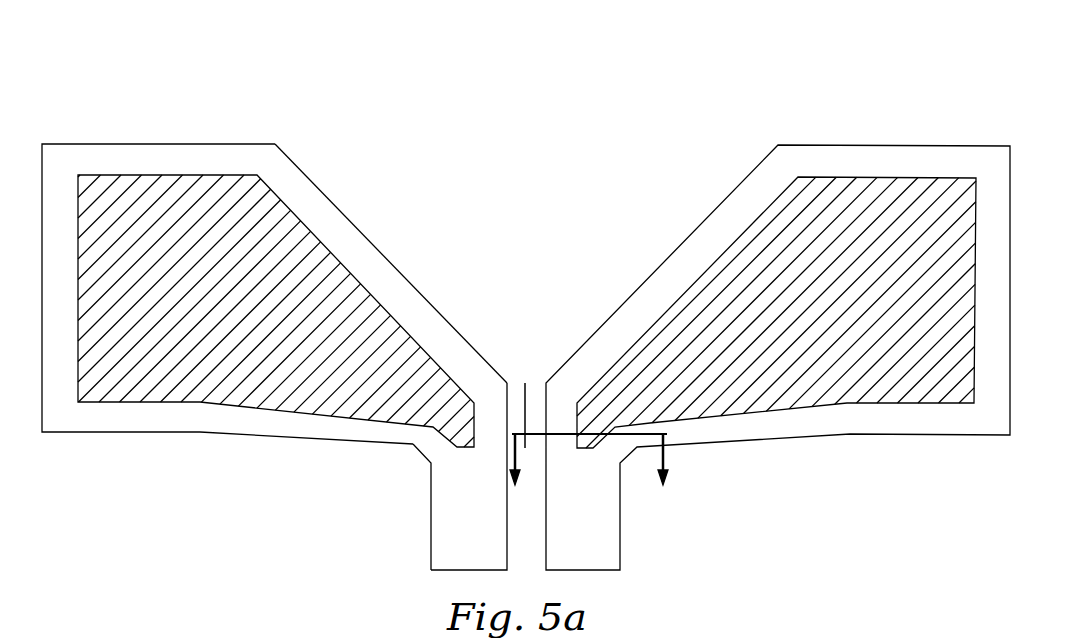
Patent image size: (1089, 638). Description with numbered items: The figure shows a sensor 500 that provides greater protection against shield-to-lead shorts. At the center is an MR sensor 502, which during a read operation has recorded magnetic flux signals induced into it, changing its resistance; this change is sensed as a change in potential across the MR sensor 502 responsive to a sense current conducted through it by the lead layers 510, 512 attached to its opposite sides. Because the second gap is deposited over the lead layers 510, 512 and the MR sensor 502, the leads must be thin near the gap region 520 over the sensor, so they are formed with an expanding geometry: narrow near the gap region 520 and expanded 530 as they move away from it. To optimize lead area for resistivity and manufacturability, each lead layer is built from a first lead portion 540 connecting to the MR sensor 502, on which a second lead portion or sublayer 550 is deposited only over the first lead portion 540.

The sensor 500 is at (558, 296).
The MR sensor 502 is at (508, 430).
The lead layer 510 is at (315, 478).
The lead layer 512 is at (735, 478).
The gap region 520 is at (429, 517).
The expanded portion of lead layer 530 is at (393, 265).
The first lead portion 540 is at (100, 428).
The second lead portion 550 is at (177, 175).